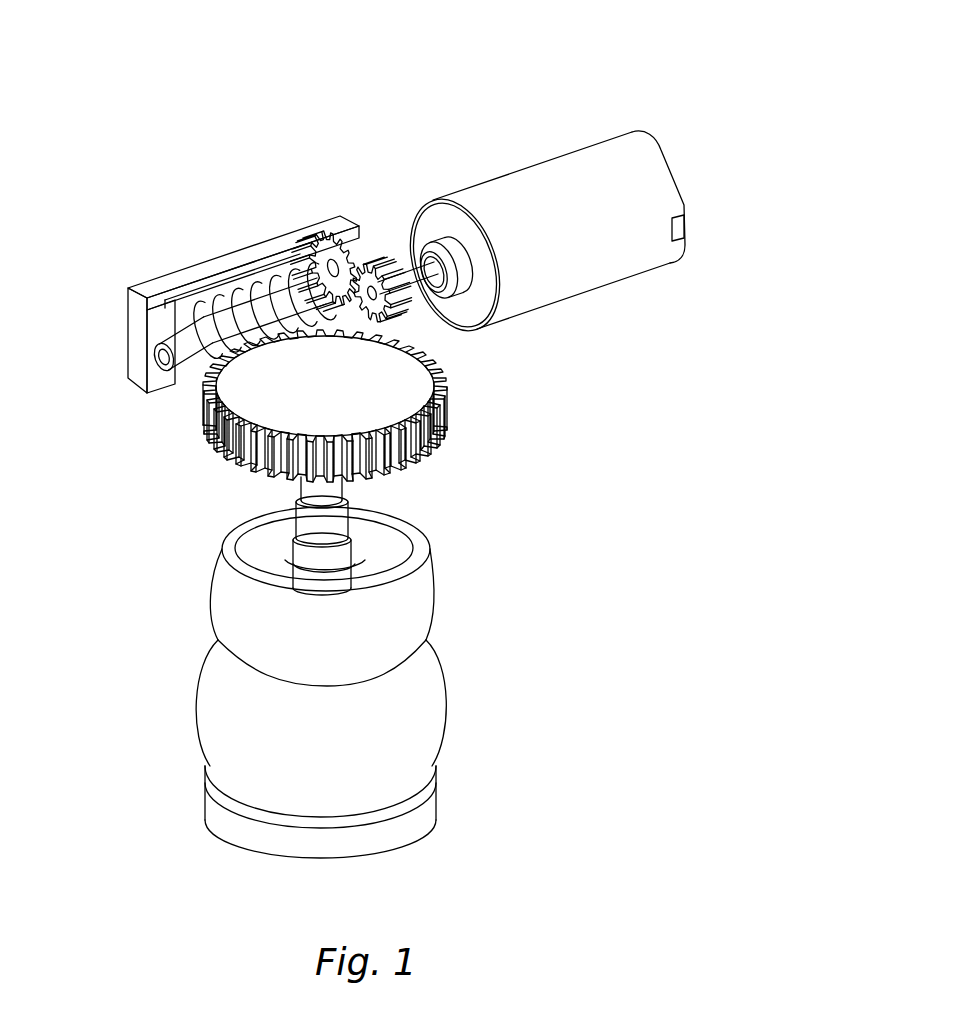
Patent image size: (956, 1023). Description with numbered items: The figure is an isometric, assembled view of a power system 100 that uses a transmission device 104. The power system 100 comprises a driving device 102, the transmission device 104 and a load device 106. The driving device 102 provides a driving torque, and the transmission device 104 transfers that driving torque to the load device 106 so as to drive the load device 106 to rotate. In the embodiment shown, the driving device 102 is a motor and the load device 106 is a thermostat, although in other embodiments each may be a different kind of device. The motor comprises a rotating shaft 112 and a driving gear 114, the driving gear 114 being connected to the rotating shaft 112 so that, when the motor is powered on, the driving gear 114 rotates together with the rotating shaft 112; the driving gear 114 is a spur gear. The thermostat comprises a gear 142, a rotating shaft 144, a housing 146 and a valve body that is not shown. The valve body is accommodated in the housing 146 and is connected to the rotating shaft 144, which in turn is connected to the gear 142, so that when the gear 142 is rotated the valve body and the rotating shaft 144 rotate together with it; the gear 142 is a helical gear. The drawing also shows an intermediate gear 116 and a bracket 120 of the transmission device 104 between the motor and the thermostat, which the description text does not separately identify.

The power system 100 is at (750, 104).
The driving device 102 is at (586, 162).
The transmission device 104 is at (136, 179).
The load device 106 is at (562, 520).
The rotating shaft 112 is at (425, 310).
The driving gear 114 is at (397, 258).
The driven gear 116 is at (345, 232).
The bracket 120 is at (228, 275).
The gear 142 is at (440, 440).
The rotating shaft 144 is at (332, 492).
The housing 146 is at (430, 700).